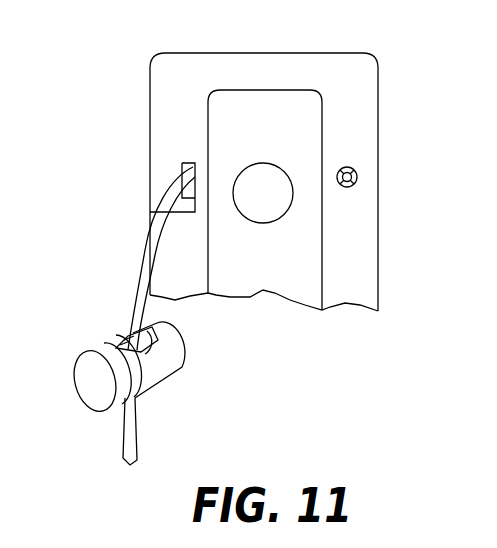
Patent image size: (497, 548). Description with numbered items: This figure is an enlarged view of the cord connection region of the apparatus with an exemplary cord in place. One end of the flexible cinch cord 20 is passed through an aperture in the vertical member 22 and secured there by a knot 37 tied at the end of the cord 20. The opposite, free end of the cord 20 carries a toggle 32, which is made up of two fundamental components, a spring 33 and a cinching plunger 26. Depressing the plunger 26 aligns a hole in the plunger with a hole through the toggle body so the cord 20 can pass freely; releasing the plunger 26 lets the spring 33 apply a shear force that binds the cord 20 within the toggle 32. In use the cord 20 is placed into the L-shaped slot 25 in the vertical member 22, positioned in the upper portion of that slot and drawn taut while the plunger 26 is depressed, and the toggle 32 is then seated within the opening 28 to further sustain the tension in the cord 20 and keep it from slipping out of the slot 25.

The cord 20 is at (135, 273).
The vertical member 22 is at (162, 120).
The L-shaped slot 25 is at (158, 204).
The cinching plunger 26 is at (88, 385).
The opening 28 is at (265, 163).
The toggle 32 is at (108, 342).
The spring 33 is at (163, 327).
The knot 37 is at (348, 167).